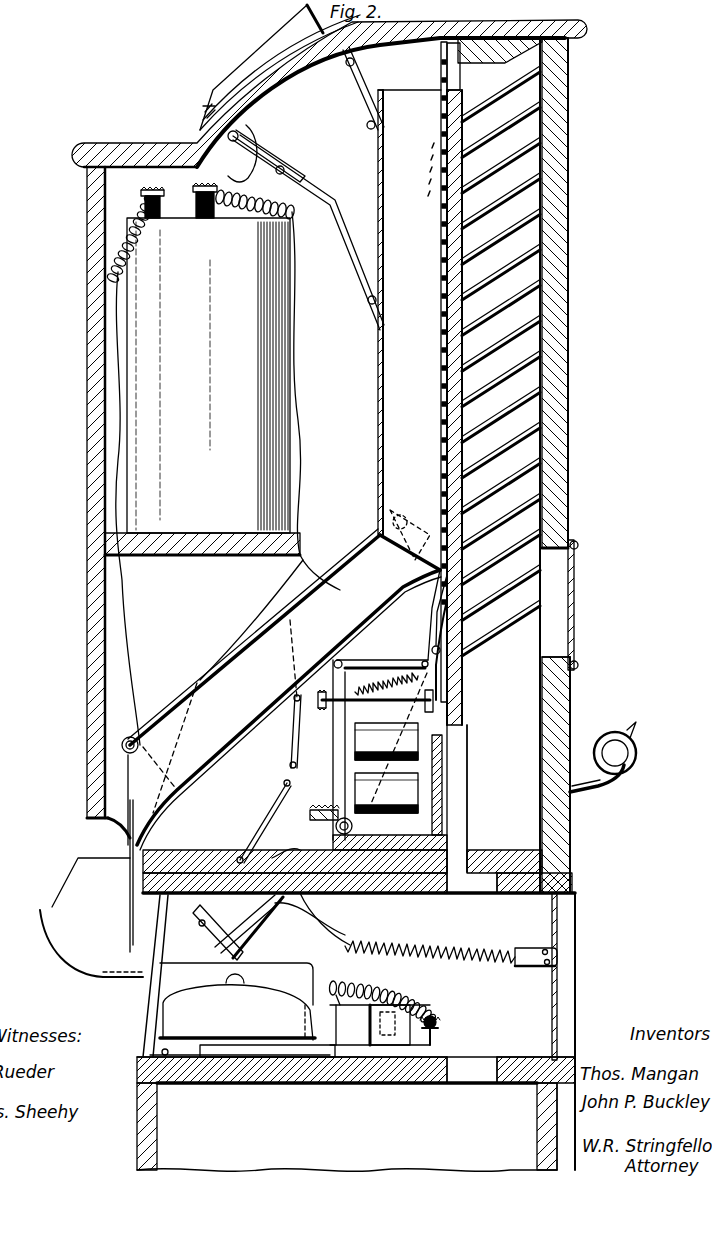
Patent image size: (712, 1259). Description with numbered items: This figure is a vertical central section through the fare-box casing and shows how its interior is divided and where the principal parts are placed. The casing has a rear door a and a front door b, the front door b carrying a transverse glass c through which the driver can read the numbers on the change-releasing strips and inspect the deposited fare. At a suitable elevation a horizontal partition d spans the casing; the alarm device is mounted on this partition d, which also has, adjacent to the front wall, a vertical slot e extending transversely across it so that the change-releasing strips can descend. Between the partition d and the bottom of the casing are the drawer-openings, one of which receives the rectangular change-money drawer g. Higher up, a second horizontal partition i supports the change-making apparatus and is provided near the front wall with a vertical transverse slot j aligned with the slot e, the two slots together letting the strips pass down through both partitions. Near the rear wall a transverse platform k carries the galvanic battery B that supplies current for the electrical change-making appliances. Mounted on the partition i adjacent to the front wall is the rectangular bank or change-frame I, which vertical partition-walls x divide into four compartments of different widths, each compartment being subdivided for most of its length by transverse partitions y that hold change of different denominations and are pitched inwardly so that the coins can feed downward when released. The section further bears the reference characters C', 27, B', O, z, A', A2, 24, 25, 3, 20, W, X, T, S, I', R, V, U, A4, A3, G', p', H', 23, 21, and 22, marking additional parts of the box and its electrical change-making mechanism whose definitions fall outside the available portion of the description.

The curved cover plate C' is at (275, 67).
The hinge 27 is at (231, 153).
The strut linkage B' is at (308, 188).
The rear door a is at (90, 612).
The front door b is at (568, 513).
The transverse glass c is at (578, 632).
The partition wall O is at (447, 440).
The partition strip z is at (443, 483).
The subdividing transverse partitions y is at (528, 637).
The delivery chute A' is at (392, 312).
The inclined chute A2 is at (284, 680).
The electrical galvanic battery B is at (208, 375).
The battery terminal 24 is at (152, 205).
The battery terminal 25 is at (212, 200).
The transverse platform k is at (212, 558).
The conductor wire 3 is at (136, 668).
The conductor wire 20 is at (305, 269).
The armature bar W is at (398, 670).
The spring X is at (382, 684).
The armature rod T is at (326, 712).
The bracket S is at (333, 760).
The link I' is at (278, 699).
The electromagnet R is at (398, 754).
The lever V is at (436, 636).
The guide U is at (462, 705).
The bank or change-frame I is at (500, 669).
The vertical partition-walls x is at (508, 762).
The horizontal partition i is at (433, 893).
The vertical transverse slot j is at (460, 893).
The flap A4 is at (113, 876).
The delivery drawer A3 is at (91, 917).
The hook G' is at (482, 883).
The vertical slot e is at (482, 1080).
The horizontal partition d is at (395, 1085).
The change-money drawer g is at (347, 1127).
The bell p' is at (242, 1008).
The spring clip H' is at (451, 962).
The coil spring 23 is at (418, 992).
The contact block 21 is at (368, 1032).
The contact screw 22 is at (437, 1028).